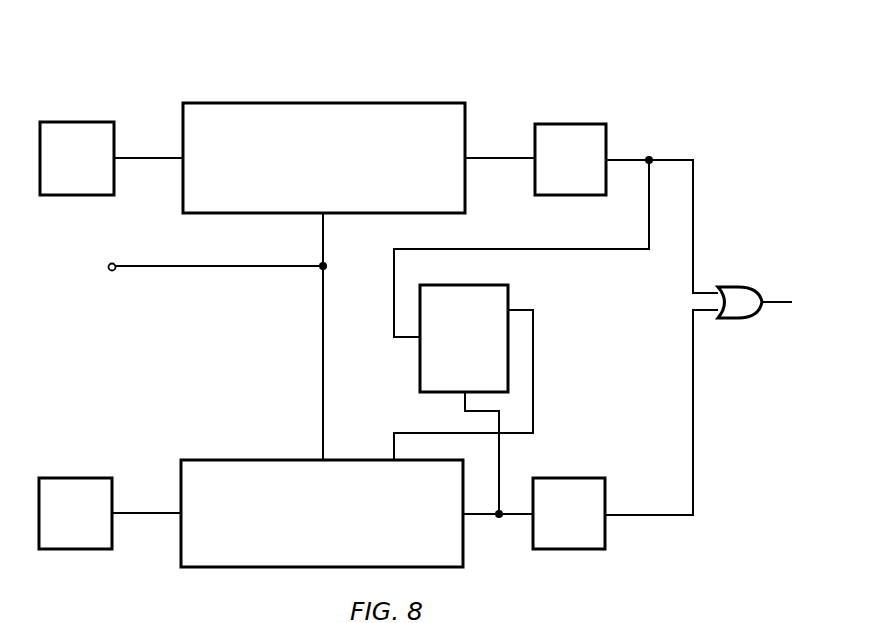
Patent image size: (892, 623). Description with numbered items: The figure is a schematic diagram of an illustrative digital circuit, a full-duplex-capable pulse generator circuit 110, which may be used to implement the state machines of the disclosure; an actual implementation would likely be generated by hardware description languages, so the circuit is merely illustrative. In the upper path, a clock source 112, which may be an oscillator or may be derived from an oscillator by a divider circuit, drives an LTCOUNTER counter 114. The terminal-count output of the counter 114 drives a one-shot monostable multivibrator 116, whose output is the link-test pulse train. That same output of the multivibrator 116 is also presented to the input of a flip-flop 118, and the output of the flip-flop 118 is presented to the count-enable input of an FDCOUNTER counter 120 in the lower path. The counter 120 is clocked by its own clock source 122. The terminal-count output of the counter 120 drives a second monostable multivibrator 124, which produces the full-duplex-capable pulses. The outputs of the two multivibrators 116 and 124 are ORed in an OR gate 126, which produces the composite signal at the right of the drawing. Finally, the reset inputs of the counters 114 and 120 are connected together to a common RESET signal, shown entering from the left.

The full-duplex-capable pulse generator circuit 110 is at (620, 84).
The clock source 112 is at (78, 122).
The LTCOUNTER counter 114 is at (252, 103).
The one-shot multivibrator 116 is at (606, 133).
The flip-flop 118 is at (508, 300).
The FDCOUNTER counter 120 is at (255, 460).
The clock source 122 is at (76, 478).
The monostable multivibrator 124 is at (606, 490).
The OR gate 126 is at (737, 287).